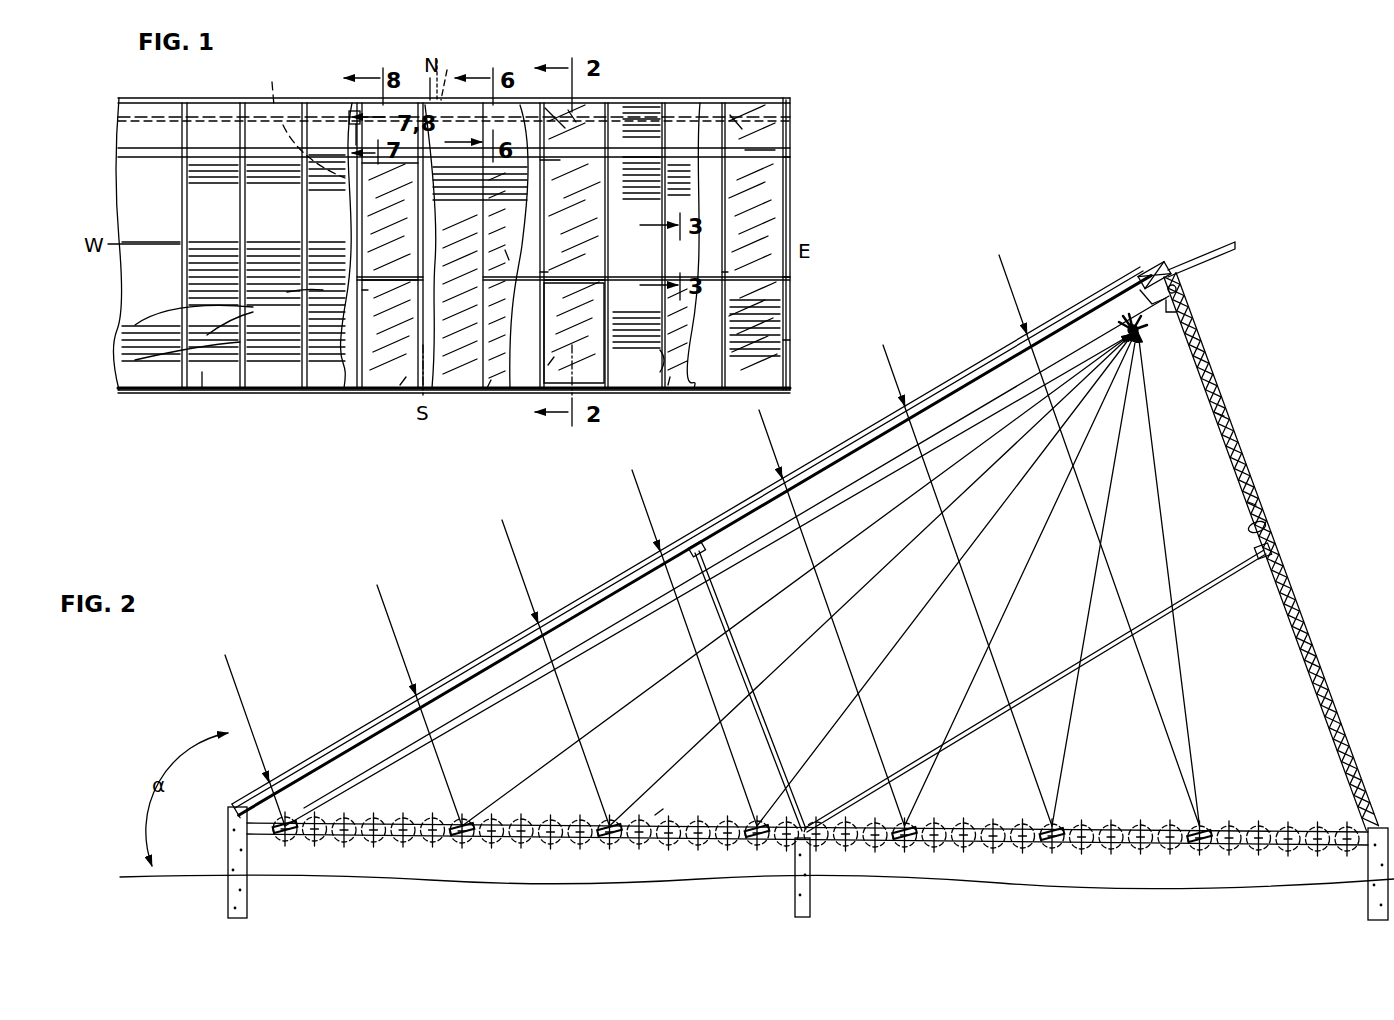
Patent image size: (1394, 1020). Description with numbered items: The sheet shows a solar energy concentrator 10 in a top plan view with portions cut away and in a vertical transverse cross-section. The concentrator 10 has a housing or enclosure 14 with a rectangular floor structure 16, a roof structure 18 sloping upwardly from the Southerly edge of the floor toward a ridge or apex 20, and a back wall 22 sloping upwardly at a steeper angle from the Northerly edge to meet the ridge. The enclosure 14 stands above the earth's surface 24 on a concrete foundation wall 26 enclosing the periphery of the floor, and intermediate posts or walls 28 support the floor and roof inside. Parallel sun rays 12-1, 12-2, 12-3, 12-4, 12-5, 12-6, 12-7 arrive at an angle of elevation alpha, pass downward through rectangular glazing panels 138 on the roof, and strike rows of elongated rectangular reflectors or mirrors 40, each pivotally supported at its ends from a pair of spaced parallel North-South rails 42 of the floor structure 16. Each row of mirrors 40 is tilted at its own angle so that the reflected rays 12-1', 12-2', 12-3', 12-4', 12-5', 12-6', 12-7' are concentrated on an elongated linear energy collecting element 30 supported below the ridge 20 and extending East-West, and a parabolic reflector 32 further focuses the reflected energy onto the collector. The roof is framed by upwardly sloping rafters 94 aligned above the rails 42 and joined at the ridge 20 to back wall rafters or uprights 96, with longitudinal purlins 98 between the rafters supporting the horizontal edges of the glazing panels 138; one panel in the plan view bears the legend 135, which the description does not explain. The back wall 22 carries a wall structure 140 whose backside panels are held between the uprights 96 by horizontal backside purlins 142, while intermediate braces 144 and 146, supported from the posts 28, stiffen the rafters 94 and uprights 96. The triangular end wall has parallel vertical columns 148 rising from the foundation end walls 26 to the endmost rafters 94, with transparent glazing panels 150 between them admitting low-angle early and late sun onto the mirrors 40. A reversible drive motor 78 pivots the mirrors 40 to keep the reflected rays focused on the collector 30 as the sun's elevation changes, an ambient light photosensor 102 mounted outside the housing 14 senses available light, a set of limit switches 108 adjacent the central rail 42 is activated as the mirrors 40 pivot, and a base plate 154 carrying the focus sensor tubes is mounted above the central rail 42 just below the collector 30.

In FIG. 1, the solar energy concentrator 10 is at (434, 448).
In FIG. 2, the solar energy concentrator 10 is at (880, 928).
In FIG. 1, the housing or enclosure 14 is at (268, 394).
In FIG. 2, the housing or enclosure 14 is at (1217, 414).
In FIG. 1, the floor structure 16 is at (207, 372).
In FIG. 2, the floor structure 16 is at (663, 848).
In FIG. 1, the roof structure 18 is at (548, 365).
In FIG. 2, the roof structure 18 is at (468, 656).
In FIG. 1, the ridge or apex 20 is at (745, 150).
In FIG. 2, the ridge or apex 20 is at (1162, 266).
In FIG. 1, the back wall 22 is at (565, 130).
In FIG. 2, the back wall 22 is at (1252, 505).
In FIG. 2, the earth's surface 24 is at (428, 880).
In FIG. 2, the foundation wall 26 is at (248, 865).
In FIG. 2, the intermediate posts or walls 28 is at (796, 870).
In FIG. 2, the linear energy collecting element 30 is at (1185, 288).
In FIG. 2, the parabolic reflector 32 is at (1180, 322).
In FIG. 2, the reflectors 40 is at (290, 815).
In FIG. 1, the rails 42 is at (482, 270).
In FIG. 2, the rails 42 is at (655, 815).
In FIG. 1, the reversible drive motor 78 is at (350, 116).
In FIG. 1, the rafters 94 is at (545, 281).
In FIG. 2, the rafters 94 is at (572, 652).
In FIG. 1, the back wall rafters or uprights 96 is at (730, 115).
In FIG. 2, the back wall rafters or uprights 96 is at (1272, 530).
In FIG. 1, the purlins 98 is at (545, 278).
In FIG. 2, the purlins 98 is at (705, 553).
In FIG. 1, the ambient light photosensor 102 is at (462, 73).
In FIG. 2, the ambient light photosensor 102 is at (1220, 252).
In FIG. 2, the limit switches 108 is at (1170, 340).
In FIG. 1, the panel section 135 is at (586, 343).
In FIG. 1, the glazing panels 138 is at (400, 225).
In FIG. 2, the glazing panels 138 is at (348, 738).
In FIG. 2, the wall structure 140 is at (1231, 456).
In FIG. 2, the horizontal backside purlins 142 is at (1275, 552).
In FIG. 2, the intermediate brace 144 is at (748, 656).
In FIG. 2, the intermediate brace 146 is at (1012, 700).
In FIG. 1, the vertical columns 148 is at (790, 160).
In FIG. 1, the transparent glazing panels 150 is at (790, 130).
In FIG. 1, the base plate 154 is at (294, 120).
In FIG. 2, the sun ray 12-1 is at (263, 740).
In FIG. 2, the sun ray 12-2 is at (419, 696).
In FIG. 2, the sun ray 12-3 is at (556, 673).
In FIG. 2, the sun ray 12-4 is at (694, 642).
In FIG. 2, the sun ray 12-5 is at (832, 618).
In FIG. 2, the sun ray 12-6 is at (967, 582).
In FIG. 2, the sun ray 12-7 is at (1099, 540).
In FIG. 2, the reflected ray 12-1' is at (708, 580).
In FIG. 2, the reflected ray 12-2' is at (797, 579).
In FIG. 2, the reflected ray 12-3' is at (872, 579).
In FIG. 2, the reflected ray 12-4' is at (946, 578).
In FIG. 2, the reflected ray 12-5' is at (1021, 578).
In FIG. 2, the reflected ray 12-6' is at (1094, 578).
In FIG. 2, the reflected ray 12-7' is at (1191, 579).